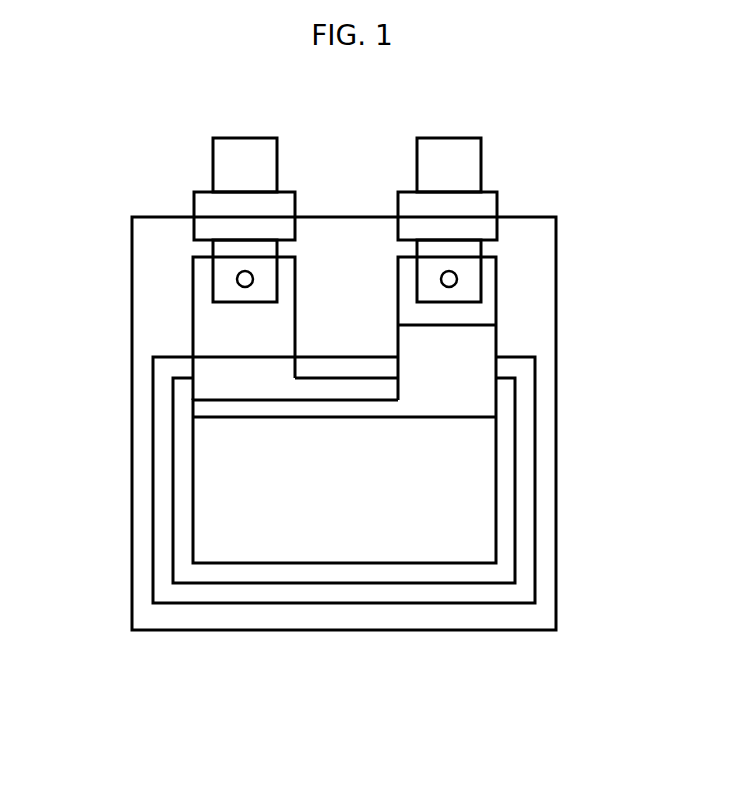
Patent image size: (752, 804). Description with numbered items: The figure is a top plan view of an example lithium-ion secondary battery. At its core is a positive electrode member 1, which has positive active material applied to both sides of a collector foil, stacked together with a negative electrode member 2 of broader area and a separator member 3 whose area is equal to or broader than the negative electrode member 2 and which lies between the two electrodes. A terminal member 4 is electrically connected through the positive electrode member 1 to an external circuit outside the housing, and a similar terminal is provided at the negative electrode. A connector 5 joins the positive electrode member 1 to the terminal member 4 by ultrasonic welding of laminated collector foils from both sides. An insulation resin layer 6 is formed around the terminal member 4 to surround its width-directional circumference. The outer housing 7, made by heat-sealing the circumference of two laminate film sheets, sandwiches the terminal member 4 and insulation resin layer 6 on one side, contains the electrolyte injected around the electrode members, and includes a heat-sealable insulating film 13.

The positive electrode member 1 is at (408, 547).
The negative electrode member 2 is at (253, 583).
The separator member 3 is at (152, 508).
The terminal member 4 is at (232, 165).
The connector 5 is at (244, 279).
The insulation resin layer 6 is at (195, 200).
The outer housing 7 is at (558, 313).
The heat-sealable insulating film 13 is at (472, 352).